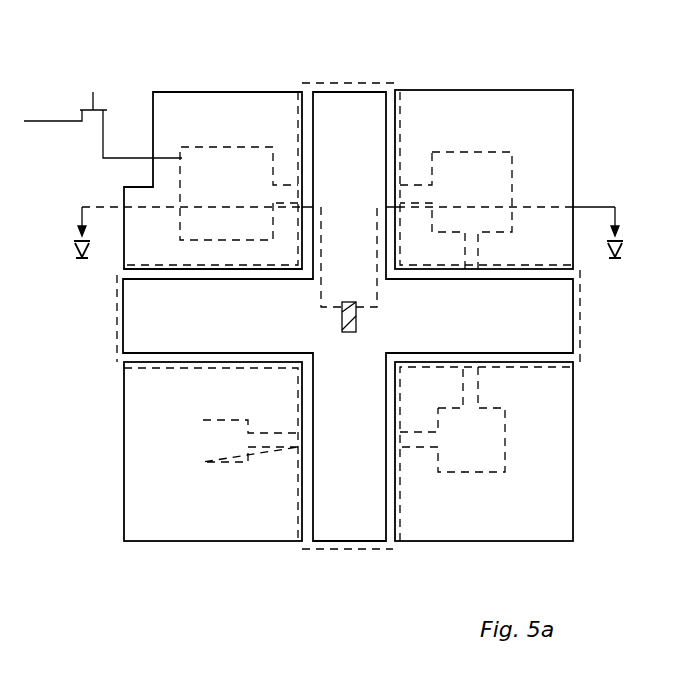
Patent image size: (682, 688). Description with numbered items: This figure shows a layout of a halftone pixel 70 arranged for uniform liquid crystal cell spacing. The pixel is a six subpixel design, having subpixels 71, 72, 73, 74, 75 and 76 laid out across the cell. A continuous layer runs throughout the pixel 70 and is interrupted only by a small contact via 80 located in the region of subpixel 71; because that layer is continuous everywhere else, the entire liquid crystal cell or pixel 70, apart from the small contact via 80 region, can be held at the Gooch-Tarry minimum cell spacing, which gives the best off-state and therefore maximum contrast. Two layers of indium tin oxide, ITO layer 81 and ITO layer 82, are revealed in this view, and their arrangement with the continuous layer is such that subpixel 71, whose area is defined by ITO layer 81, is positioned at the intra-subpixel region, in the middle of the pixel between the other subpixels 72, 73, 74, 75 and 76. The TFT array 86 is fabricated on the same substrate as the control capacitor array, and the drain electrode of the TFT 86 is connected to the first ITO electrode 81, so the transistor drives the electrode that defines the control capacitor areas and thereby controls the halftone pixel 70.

The halftone pixel 70 is at (555, 63).
The subpixel 71 is at (364, 259).
The subpixel 72 is at (302, 91).
The subpixel 73 is at (240, 220).
The subpixel 74 is at (484, 215).
The subpixel 75 is at (484, 454).
The subpixel 76 is at (222, 420).
The contact via 80 is at (356, 318).
The ITO layer 81 is at (375, 84).
The ITO layer 82 is at (573, 512).
The TFT array 86 is at (103, 130).